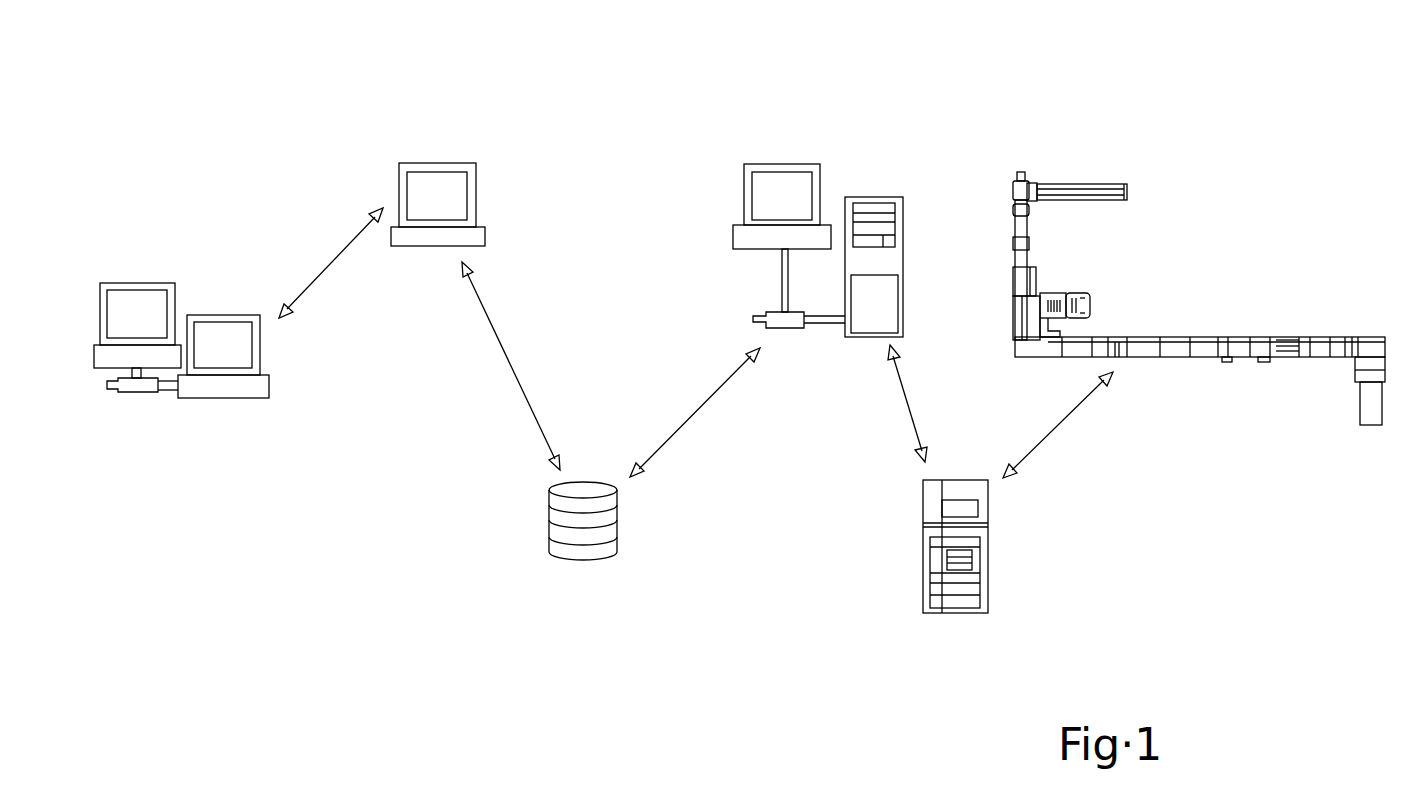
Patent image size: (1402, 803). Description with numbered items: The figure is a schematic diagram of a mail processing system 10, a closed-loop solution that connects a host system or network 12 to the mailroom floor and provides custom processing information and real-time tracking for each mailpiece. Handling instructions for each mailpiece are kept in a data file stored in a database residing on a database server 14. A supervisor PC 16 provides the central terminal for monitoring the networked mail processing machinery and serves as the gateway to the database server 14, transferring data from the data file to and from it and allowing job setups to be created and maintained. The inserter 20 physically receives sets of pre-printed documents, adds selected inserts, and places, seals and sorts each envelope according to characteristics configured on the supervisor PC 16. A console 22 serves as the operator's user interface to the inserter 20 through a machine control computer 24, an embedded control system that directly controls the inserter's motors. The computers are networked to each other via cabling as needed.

The mail processing system 10 is at (238, 140).
The host system or network 12 is at (131, 283).
The database server 14 is at (549, 500).
The supervisor PC 16 is at (476, 180).
The inserter 20 is at (1161, 222).
The console 22 is at (745, 203).
The machine control computer 24 is at (988, 520).